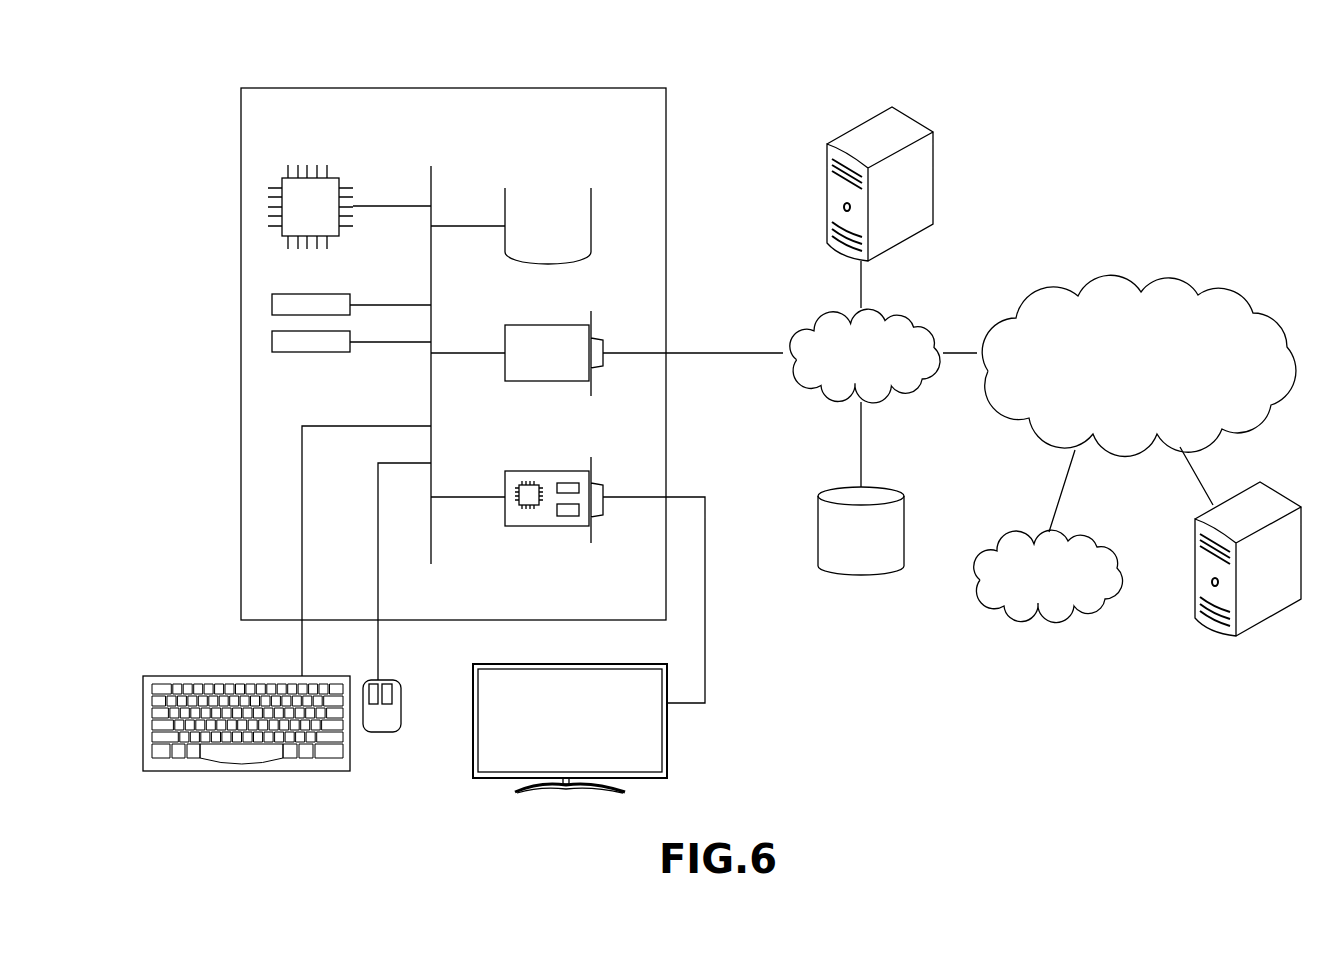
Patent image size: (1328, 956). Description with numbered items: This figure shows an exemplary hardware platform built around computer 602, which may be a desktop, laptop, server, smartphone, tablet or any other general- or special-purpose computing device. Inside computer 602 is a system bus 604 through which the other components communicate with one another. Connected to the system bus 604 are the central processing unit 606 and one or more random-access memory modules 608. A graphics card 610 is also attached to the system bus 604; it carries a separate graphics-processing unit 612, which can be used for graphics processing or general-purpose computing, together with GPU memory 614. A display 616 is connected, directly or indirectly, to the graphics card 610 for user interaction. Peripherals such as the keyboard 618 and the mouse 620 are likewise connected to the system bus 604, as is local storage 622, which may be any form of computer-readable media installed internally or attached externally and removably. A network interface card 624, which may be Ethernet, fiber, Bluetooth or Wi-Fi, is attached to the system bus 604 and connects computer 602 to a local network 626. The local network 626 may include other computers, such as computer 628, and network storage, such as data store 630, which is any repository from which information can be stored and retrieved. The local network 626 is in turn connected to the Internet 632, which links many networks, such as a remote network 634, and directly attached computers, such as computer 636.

The computer 602 is at (621, 88).
The system bus 604 is at (432, 170).
The central processing unit 606 is at (336, 178).
The random-access memory modules 608 is at (350, 336).
The graphics card 610 is at (505, 482).
The graphics-processing unit 612 is at (528, 507).
The GPU memory 614 is at (565, 517).
The display 616 is at (667, 757).
The keyboard 618 is at (250, 773).
The mouse 620 is at (378, 735).
The local storage 622 is at (593, 208).
The network interface card 624 is at (505, 335).
The local network 626 is at (917, 308).
The computer 628 is at (918, 120).
The data store 630 is at (898, 488).
The Internet 632 is at (1182, 272).
The remote network 634 is at (1103, 530).
The computer 636 is at (1278, 488).